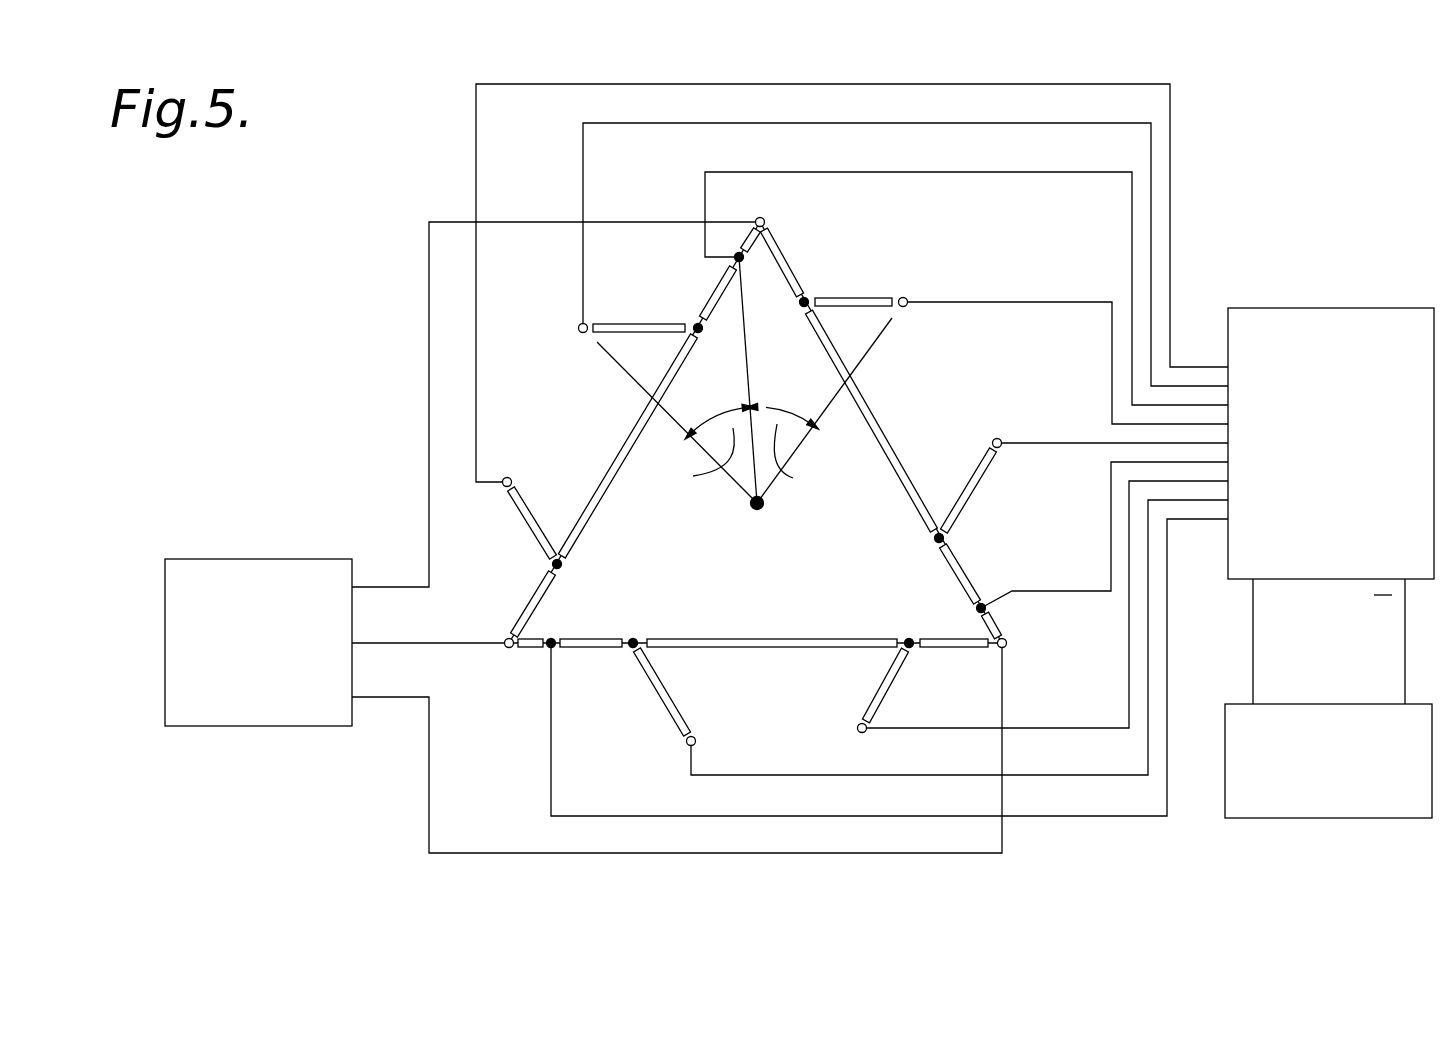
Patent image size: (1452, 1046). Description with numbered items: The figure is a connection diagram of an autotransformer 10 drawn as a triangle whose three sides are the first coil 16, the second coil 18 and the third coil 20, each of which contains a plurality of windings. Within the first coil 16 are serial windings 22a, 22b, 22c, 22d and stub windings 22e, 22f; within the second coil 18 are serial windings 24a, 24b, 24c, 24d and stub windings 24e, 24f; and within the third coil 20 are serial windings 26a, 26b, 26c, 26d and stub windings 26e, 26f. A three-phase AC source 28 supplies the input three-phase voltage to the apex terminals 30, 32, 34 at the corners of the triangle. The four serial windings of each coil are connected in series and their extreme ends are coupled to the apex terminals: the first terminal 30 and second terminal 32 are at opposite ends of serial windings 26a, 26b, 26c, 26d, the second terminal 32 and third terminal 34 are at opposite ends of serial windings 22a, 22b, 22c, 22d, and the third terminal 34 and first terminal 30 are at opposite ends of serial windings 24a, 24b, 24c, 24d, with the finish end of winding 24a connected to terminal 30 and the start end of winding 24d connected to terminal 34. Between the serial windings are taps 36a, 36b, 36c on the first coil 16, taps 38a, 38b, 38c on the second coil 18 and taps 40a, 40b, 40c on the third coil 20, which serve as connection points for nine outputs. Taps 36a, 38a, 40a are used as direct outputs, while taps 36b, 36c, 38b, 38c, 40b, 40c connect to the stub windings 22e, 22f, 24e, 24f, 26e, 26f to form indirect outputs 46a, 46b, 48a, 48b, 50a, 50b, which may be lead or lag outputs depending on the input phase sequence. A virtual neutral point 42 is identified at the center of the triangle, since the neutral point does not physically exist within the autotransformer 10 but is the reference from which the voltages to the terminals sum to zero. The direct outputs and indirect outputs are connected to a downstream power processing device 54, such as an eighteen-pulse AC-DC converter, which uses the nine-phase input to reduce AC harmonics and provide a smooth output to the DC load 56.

The autotransformer 10 is at (812, 540).
The first coil 16 is at (732, 638).
The second coil 18 is at (600, 504).
The third coil 20 is at (898, 462).
The first serial winding of first coil 22a is at (532, 648).
The second serial winding of first coil 22b is at (588, 648).
The third serial winding of first coil 22c is at (790, 648).
The fourth serial winding of first coil 22d is at (952, 637).
The stub winding of first coil 22e is at (858, 300).
The stub winding of first coil 22f is at (640, 334).
The first serial winding of second coil 24a is at (746, 236).
The second serial winding of second coil 24b is at (720, 284).
The third serial winding of second coil 24c is at (624, 449).
The fourth serial winding of second coil 24d is at (531, 602).
The stub winding of second coil 24e is at (887, 686).
The stub winding of second coil 24f is at (981, 474).
The first serial winding of third coil 26a is at (994, 621).
The second serial winding of third coil 26b is at (954, 562).
The third serial winding of third coil 26c is at (869, 412).
The fourth serial winding of third coil 26d is at (786, 265).
The stub winding of third coil 26e is at (529, 525).
The stub winding of third coil 26f is at (666, 708).
The three-phase AC source 28 is at (275, 560).
The first apex terminal 30 is at (762, 218).
The second apex terminal 32 is at (1005, 650).
The third apex terminal 34 is at (505, 648).
The direct tap of first coil 36a is at (553, 637).
The tap of first coil 36b is at (630, 638).
The tap of first coil 36c is at (905, 640).
The direct tap of second coil 38a is at (743, 261).
The tap of second coil 38b is at (700, 334).
The tap of second coil 38c is at (555, 564).
The direct tap of third coil 40a is at (982, 605).
The tap of third coil 40b is at (937, 540).
The tap of third coil 40c is at (806, 298).
The virtual neutral point 42 is at (757, 512).
The indirect output of first coil 46a is at (697, 742).
The indirect output of first coil 46b is at (858, 728).
The indirect output of second coil 48a is at (582, 325).
The indirect output of second coil 48b is at (507, 478).
The indirect output of third coil 50a is at (997, 438).
The indirect output of third coil 50b is at (904, 306).
The power processing device 54 is at (1312, 310).
The DC load 56 is at (1298, 818).